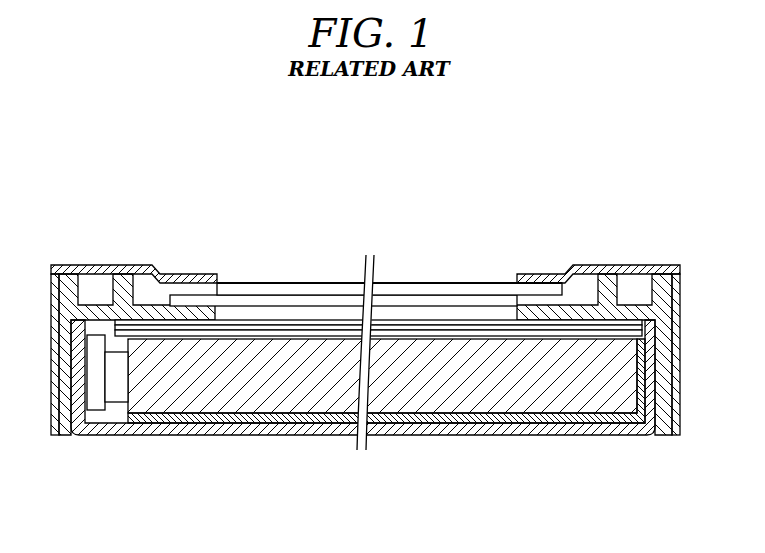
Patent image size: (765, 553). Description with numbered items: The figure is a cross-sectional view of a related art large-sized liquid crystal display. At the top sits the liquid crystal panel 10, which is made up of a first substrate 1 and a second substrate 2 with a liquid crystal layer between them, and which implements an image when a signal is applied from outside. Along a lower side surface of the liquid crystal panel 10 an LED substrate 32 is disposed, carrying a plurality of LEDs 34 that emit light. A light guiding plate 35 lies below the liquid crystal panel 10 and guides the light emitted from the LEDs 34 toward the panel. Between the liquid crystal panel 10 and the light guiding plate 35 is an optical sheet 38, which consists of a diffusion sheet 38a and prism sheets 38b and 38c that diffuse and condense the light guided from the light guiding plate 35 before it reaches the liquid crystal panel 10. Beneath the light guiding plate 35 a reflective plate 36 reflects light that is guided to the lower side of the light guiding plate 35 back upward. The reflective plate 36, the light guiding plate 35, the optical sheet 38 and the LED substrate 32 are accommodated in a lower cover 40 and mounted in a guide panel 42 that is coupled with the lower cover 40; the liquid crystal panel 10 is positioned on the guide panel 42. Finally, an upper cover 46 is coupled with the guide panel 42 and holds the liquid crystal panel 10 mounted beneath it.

The first substrate 1 is at (242, 302).
The second substrate 2 is at (276, 287).
The liquid crystal panel 10 is at (325, 272).
The LED substrate 32 is at (95, 400).
The LEDs 34 is at (123, 380).
The light guiding plate 35 is at (295, 393).
The reflective plate 36 is at (235, 420).
The optical sheet 38 is at (378, 252).
The diffusion sheet 38a is at (495, 335).
The prism sheet 38b is at (458, 330).
The prism sheet 38c is at (420, 318).
The lower cover 40 is at (653, 398).
The guide panel 42 is at (660, 358).
The upper cover 46 is at (622, 267).